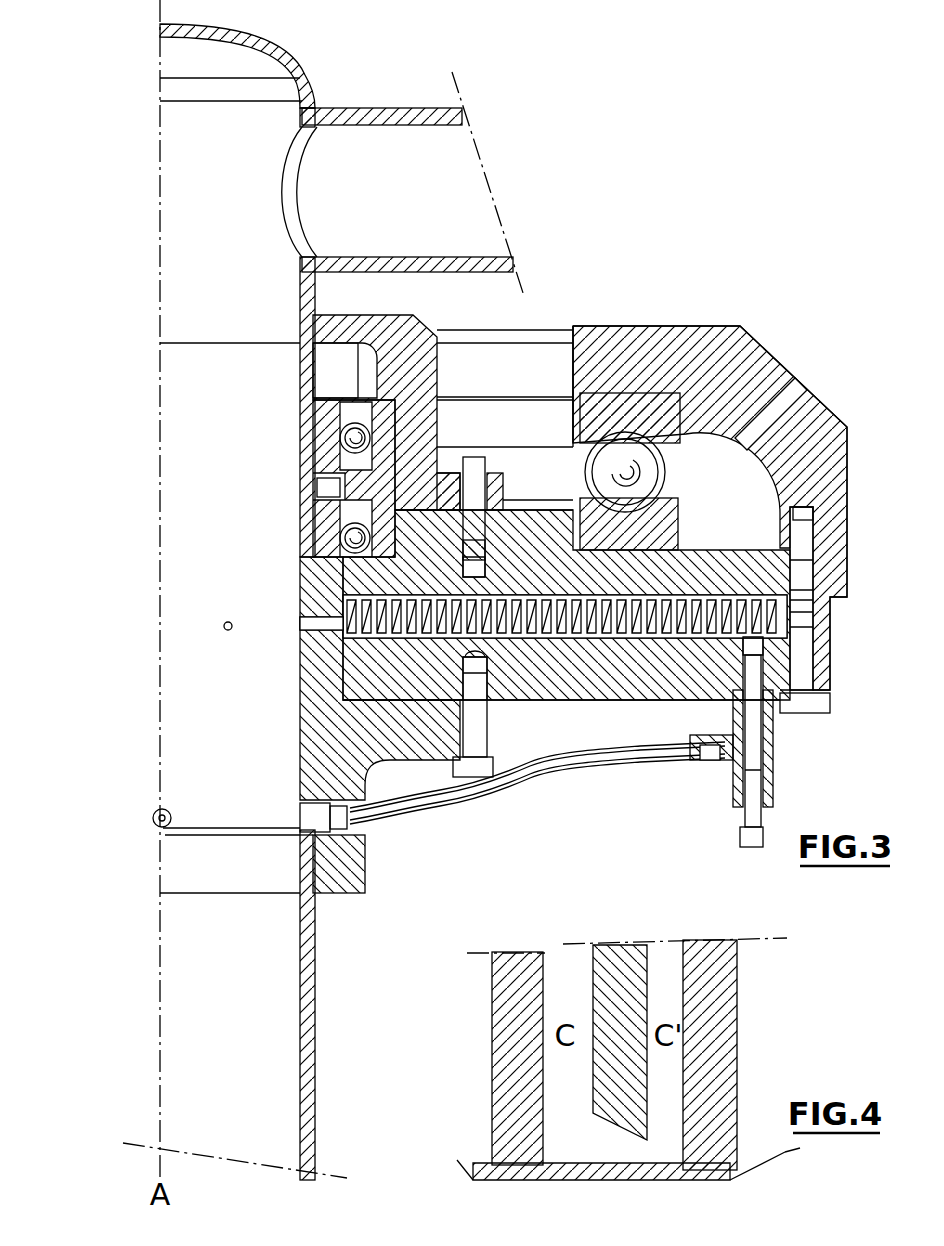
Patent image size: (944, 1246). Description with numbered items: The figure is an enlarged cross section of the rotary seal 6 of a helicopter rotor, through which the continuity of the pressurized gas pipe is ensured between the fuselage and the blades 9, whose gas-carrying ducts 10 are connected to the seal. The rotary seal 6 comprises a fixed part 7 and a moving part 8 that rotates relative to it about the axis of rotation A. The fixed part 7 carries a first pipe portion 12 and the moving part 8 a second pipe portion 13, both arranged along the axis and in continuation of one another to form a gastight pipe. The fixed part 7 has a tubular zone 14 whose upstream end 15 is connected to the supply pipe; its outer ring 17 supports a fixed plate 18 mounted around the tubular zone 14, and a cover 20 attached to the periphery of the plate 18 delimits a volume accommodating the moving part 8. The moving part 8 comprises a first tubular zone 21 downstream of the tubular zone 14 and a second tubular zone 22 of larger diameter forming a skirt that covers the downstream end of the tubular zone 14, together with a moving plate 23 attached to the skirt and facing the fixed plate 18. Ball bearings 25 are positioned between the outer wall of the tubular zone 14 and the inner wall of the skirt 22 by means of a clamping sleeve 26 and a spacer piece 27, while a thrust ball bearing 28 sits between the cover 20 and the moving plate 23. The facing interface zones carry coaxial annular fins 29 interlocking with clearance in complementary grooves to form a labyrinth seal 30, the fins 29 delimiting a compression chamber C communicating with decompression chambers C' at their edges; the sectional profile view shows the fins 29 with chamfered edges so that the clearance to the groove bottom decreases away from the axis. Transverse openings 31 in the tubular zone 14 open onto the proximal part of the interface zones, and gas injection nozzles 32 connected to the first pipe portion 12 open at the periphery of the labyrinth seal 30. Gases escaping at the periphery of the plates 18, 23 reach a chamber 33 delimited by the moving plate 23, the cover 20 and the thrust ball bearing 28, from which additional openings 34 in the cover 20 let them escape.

In FIG. 3, the rotary seal 6 is at (628, 245).
In FIG. 3, the fixed part 7 is at (575, 790).
In FIG. 3, the moving part 8 is at (343, 84).
In FIG. 3, the blades 9 is at (407, 107).
In FIG. 3, the gas-carrying channels or ducts 10 is at (433, 173).
In FIG. 3, the first pipe portion 12 is at (208, 755).
In FIG. 3, the second pipe portion 13 is at (197, 313).
In FIG. 3, the tubular zone 14 is at (340, 735).
In FIG. 3, the upstream end 15 is at (337, 870).
In FIG. 3, the outer ring 17 is at (433, 733).
In FIG. 3, the plate 18 is at (650, 700).
In FIG. 3, the cover 20 is at (735, 348).
In FIG. 3, the first tubular zone 21 is at (315, 320).
In FIG. 3, the second tubular zone 22 is at (440, 432).
In FIG. 3, the plate 23 is at (733, 574).
In FIG. 3, the ball bearings 25 is at (425, 445).
In FIG. 3, the clamping sleeve 26 is at (350, 368).
In FIG. 3, the spacer piece 27 is at (330, 486).
In FIG. 3, the thrust ball bearing 28 is at (760, 467).
In FIG. 3, the annular fins 29 is at (300, 600).
In FIG. 4, the annular fins 29 is at (523, 1017).
In FIG. 3, the labyrinth seal 30 is at (787, 620).
In FIG. 3, the transverse openings 31 is at (224, 626).
In FIG. 3, the pressurized gas injection nozzles 32 is at (770, 740).
In FIG. 3, the chamber 33 is at (750, 503).
In FIG. 3, the additional openings 34 is at (777, 400).